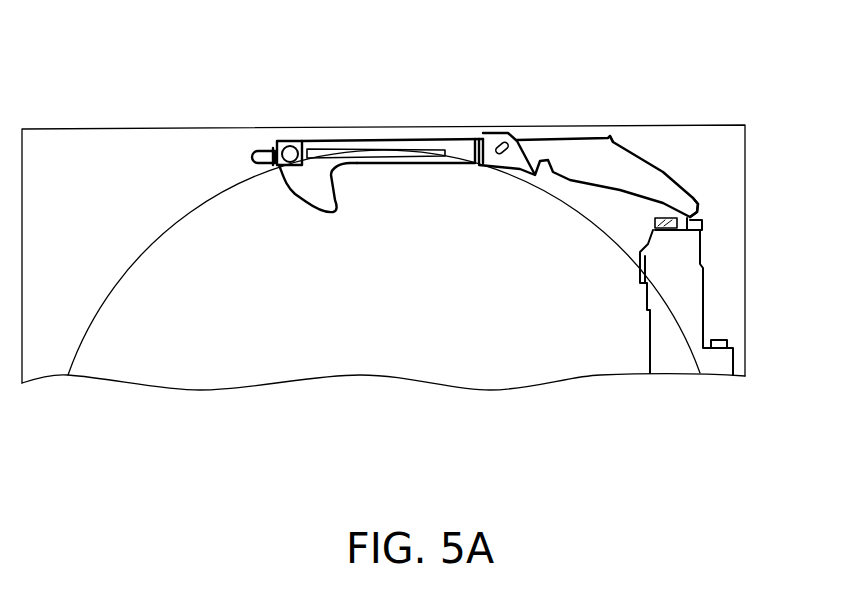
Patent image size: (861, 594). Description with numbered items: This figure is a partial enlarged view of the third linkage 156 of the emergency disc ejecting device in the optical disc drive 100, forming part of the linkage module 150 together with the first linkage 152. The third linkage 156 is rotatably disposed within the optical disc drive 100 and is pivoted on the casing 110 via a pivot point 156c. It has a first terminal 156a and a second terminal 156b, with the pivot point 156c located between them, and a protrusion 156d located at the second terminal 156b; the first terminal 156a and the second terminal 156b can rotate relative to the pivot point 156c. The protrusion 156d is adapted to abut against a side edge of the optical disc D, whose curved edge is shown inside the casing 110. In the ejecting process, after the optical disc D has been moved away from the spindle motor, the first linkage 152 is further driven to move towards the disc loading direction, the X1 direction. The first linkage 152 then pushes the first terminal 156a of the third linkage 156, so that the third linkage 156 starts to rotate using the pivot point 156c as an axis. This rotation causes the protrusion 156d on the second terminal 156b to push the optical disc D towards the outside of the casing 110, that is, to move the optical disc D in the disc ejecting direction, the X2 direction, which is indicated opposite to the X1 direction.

The optical disc drive 100 is at (717, 487).
The casing 110 is at (65, 142).
The linkage module 150 is at (720, 90).
The first linkage 152 is at (717, 378).
The third linkage 156 is at (466, 120).
The first terminal 156a is at (680, 200).
The second terminal 156b is at (279, 141).
The pivot point 156c is at (610, 135).
The protrusion 156d is at (301, 142).
The optical disc D is at (133, 365).
The disc loading direction X1 is at (792, 136).
The disc ejecting direction X2 is at (792, 156).